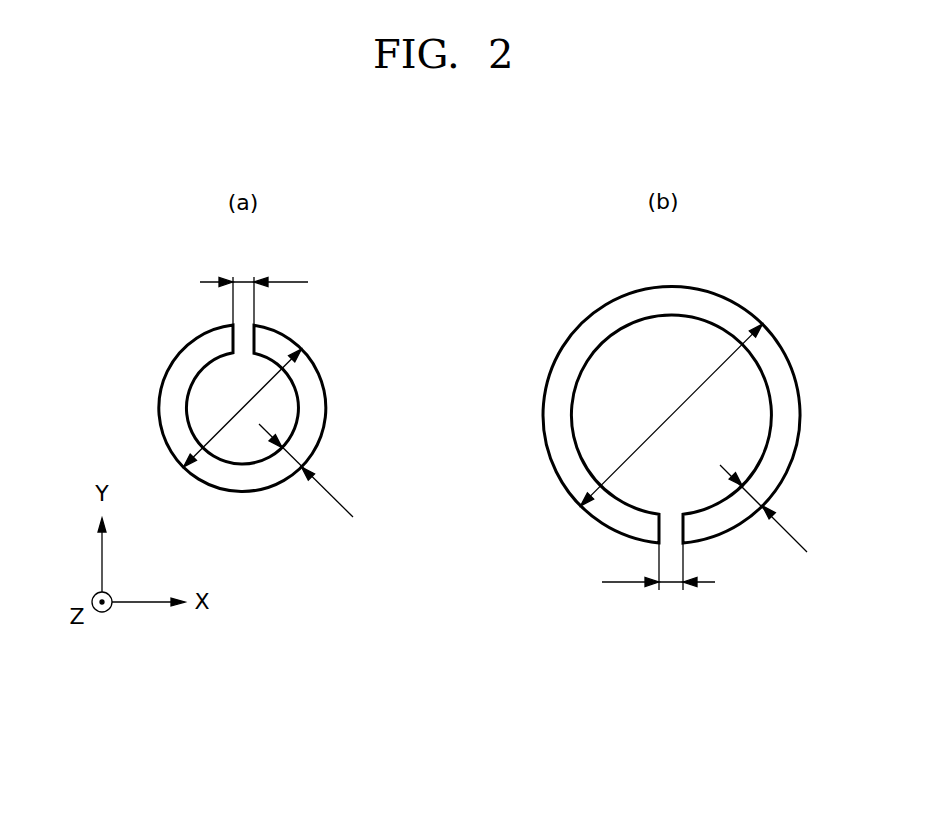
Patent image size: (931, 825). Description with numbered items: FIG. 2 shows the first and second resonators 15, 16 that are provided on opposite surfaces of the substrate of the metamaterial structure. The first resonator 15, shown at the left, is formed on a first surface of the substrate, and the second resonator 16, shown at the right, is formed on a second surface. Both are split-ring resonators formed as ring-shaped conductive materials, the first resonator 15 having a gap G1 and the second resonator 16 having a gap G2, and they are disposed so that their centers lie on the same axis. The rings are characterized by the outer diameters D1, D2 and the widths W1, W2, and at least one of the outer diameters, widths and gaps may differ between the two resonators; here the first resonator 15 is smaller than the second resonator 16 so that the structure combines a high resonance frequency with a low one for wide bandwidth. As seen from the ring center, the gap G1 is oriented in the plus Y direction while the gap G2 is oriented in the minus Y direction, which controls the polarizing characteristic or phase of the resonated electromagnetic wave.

The first resonator 15 is at (150, 370).
The second resonator 16 is at (540, 367).
The outer diameter of the first resonator D1 is at (243, 408).
The width of the first resonator W1 is at (308, 470).
The gap of the first resonator G1 is at (254, 290).
The outer diameter of the second resonator D2 is at (672, 415).
The width of the second resonator W2 is at (768, 508).
The gap of the second resonator G2 is at (658, 566).